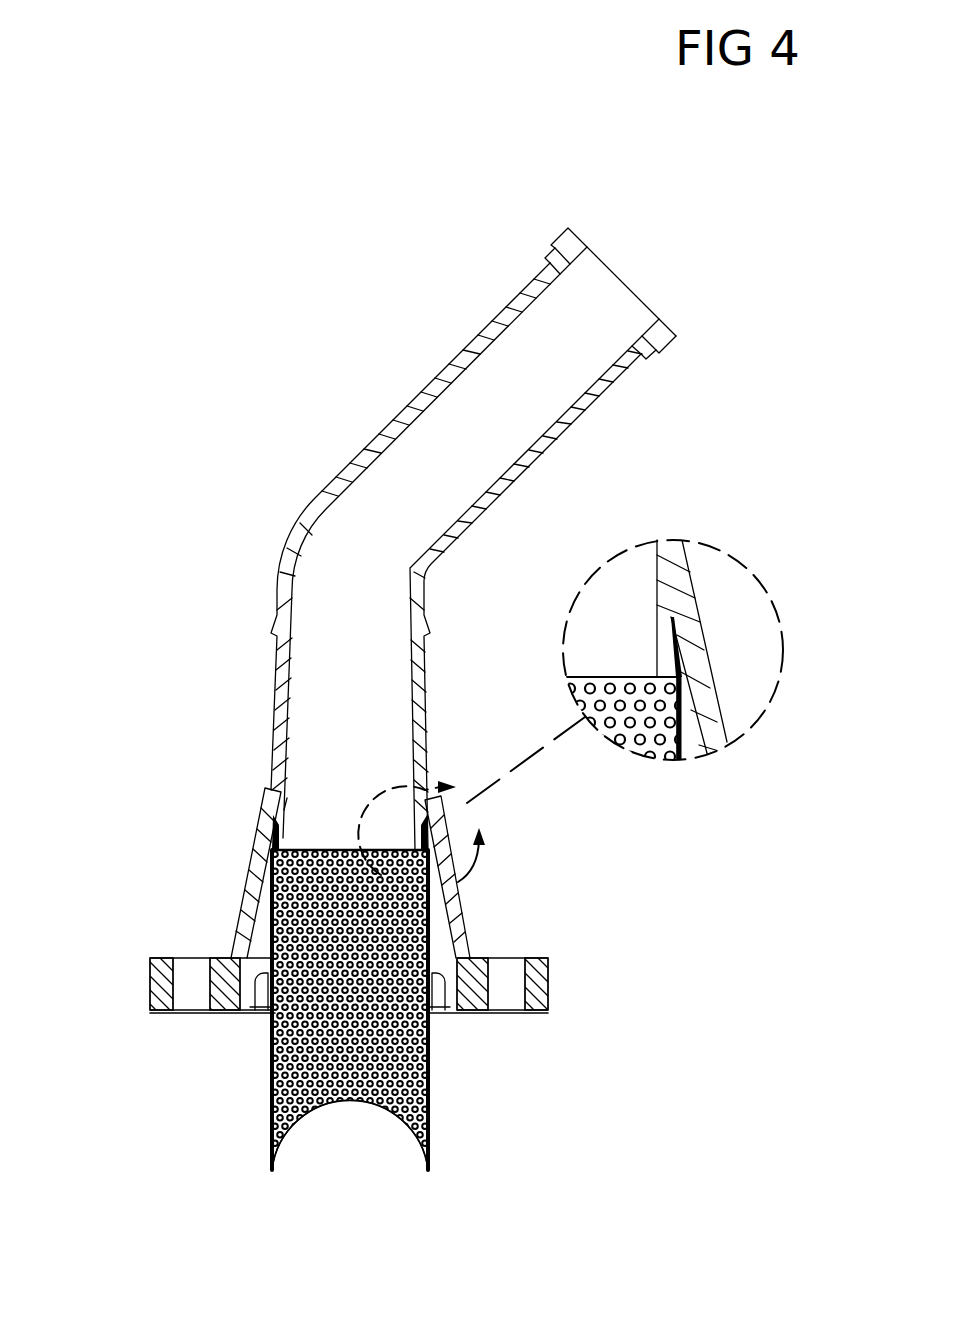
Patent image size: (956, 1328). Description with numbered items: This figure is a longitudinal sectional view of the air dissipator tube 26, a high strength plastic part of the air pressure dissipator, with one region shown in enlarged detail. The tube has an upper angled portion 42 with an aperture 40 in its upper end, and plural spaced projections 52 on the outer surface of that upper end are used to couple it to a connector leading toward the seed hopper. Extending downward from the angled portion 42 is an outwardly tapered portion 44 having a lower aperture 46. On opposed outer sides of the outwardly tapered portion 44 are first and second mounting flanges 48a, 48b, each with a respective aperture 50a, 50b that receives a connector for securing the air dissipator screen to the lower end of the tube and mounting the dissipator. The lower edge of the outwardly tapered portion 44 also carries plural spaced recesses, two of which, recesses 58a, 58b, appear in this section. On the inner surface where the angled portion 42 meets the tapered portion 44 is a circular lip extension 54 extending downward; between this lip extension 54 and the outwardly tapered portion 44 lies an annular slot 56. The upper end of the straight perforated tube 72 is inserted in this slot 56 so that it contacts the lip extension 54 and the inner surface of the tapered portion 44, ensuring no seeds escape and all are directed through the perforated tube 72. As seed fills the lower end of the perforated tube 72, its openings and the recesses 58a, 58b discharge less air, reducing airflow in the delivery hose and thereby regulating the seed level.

The air dissipator tube 26 is at (190, 392).
The aperture 40 is at (657, 322).
The upper angled portion 42 is at (300, 517).
The outwardly tapered portion 44 is at (250, 888).
The lower aperture 46 is at (655, 672).
The first mounting flange 48a is at (157, 978).
The second mounting flange 48b is at (553, 963).
The aperture 50a is at (175, 988).
The aperture 50b is at (525, 982).
The spaced projections 52 is at (664, 358).
The circular lip extension 54 is at (283, 833).
The annular slot 56 is at (723, 730).
The recess 58a is at (265, 1017).
The recess 58b is at (441, 1015).
The perforated tube 72 is at (428, 1170).